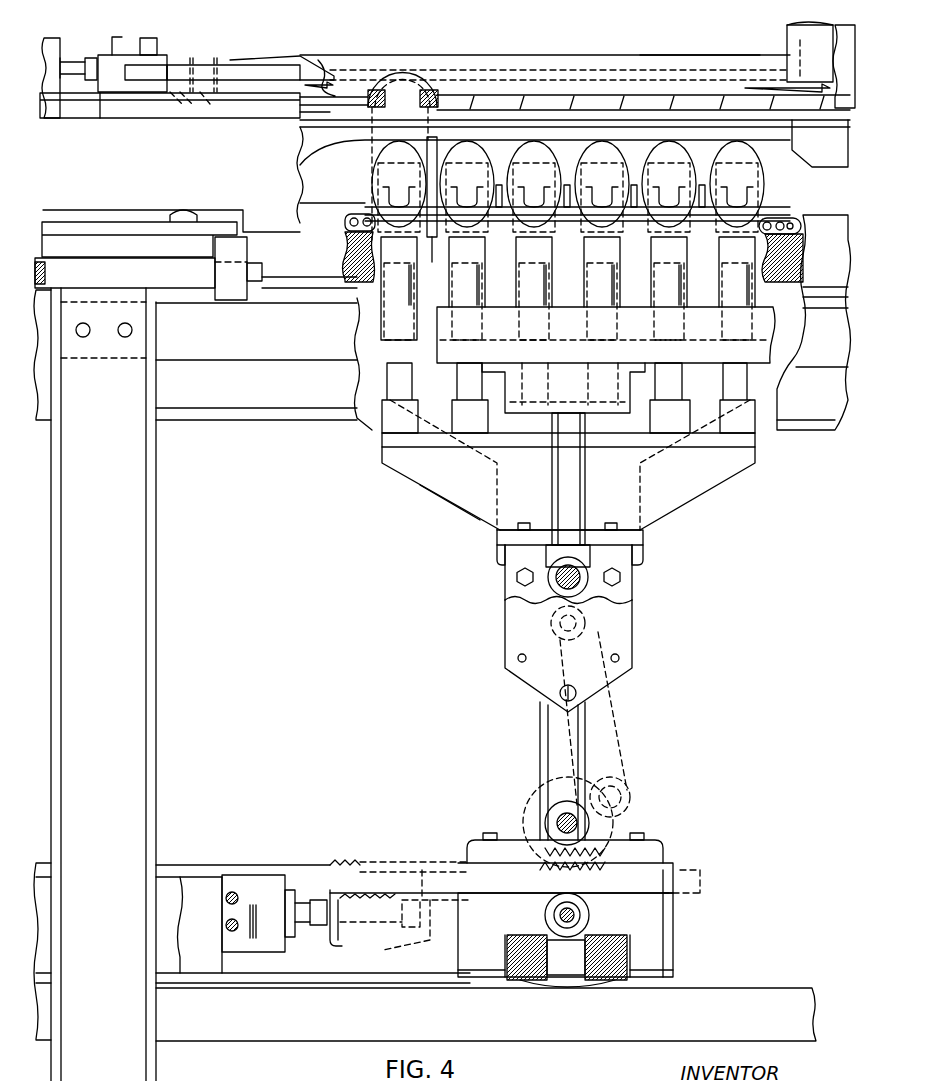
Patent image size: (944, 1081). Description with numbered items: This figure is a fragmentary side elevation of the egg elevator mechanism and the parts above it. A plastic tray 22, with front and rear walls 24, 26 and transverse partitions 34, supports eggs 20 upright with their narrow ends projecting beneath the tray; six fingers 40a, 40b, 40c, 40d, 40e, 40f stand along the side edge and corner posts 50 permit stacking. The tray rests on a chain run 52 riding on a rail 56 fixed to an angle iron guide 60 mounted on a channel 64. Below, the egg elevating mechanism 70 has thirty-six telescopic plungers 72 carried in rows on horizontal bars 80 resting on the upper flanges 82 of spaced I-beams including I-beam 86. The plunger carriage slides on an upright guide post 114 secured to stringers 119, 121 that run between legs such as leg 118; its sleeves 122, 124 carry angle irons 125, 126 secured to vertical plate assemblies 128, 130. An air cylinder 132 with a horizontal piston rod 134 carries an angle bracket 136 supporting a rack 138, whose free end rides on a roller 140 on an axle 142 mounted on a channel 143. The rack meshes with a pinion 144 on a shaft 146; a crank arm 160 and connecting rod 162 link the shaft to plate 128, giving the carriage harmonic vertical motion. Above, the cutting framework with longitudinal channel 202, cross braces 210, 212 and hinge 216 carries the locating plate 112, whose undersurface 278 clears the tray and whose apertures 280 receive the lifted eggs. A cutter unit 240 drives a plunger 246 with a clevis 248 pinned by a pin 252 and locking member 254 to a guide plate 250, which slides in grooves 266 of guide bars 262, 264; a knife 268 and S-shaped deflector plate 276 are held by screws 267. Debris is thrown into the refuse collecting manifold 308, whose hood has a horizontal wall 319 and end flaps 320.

The chicken eggs 20 is at (362, 155).
The plastic tray 22 is at (348, 190).
The front wall 24 is at (790, 200).
The rear wall 26 is at (345, 219).
The transverse partitions 34 is at (500, 222).
The finger 40a is at (735, 220).
The finger 40b is at (668, 220).
The finger 40c is at (600, 220).
The finger 40d is at (533, 220).
The finger 40e is at (465, 220).
The finger 40f is at (398, 220).
The vertical posts 50 is at (432, 235).
The chain run 52 is at (346, 240).
The rail 56 is at (790, 282).
The angle iron guide 60 is at (288, 290).
The channel 64 is at (200, 425).
The egg elevating mechanism 70 is at (376, 505).
The telescopic plungers 72 is at (372, 338).
The horizontal bar 80 is at (382, 436).
The upper flanges 82 is at (745, 444).
The I-beam 86 is at (695, 493).
The locating plate 112 is at (522, 92).
The guide post 114 is at (552, 482).
The leg 118 is at (157, 588).
The stringer 119 is at (205, 370).
The stringer 121 is at (210, 1050).
The sleeve 122 is at (548, 570).
The sleeve 124 is at (540, 742).
The angle iron 125 is at (645, 552).
The angle iron 126 is at (497, 550).
The vertical plate assembly 128 is at (634, 638).
The vertical plate assembly 130 is at (632, 596).
The air cylinder 132 is at (200, 875).
The piston rod 134 is at (300, 890).
The angle bracket 136 is at (345, 945).
The rack 138 is at (362, 865).
The roller 140 is at (580, 916).
The axle 142 is at (560, 916).
The channel 143 is at (673, 945).
The pinion 144 is at (650, 849).
The shaft 146 is at (560, 820).
The crank arm 160 is at (631, 814).
The connecting rod 162 is at (560, 694).
The longitudinal channel 202 is at (266, 222).
The cross brace 210 is at (170, 105).
The cross brace 212 is at (818, 129).
The hinge 216 is at (148, 222).
The cutter unit 240 is at (50, 105).
The plunger 246 is at (80, 82).
The clevis 248 is at (117, 97).
The guide plate 250 is at (172, 62).
The pin 252 is at (160, 30).
The slide finger locking member 254 is at (112, 36).
The guide bar 262 is at (232, 60).
The guide bar 264 is at (706, 56).
The grooves 266 is at (330, 72).
The screws 267 is at (178, 98).
The knife 268 is at (209, 102).
The S-shaped deflector plate 276 is at (286, 58).
The undersurface 278 is at (578, 112).
The circular apertures 280 is at (408, 82).
The refuse collecting manifold 308 is at (771, 88).
The horizontal wall 319 is at (821, 66).
The end flaps 320 is at (787, 48).